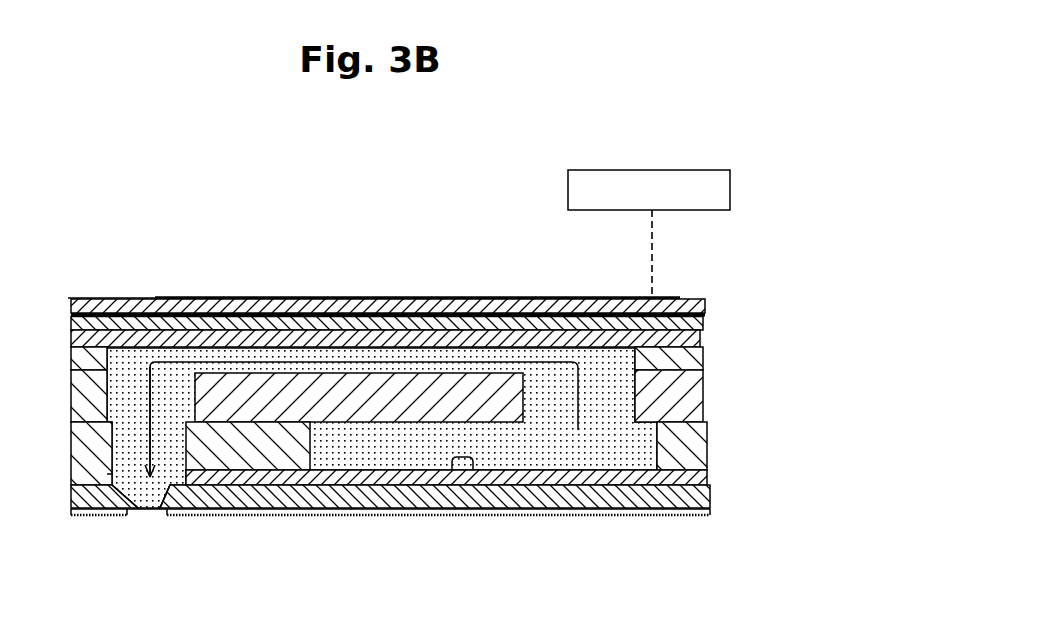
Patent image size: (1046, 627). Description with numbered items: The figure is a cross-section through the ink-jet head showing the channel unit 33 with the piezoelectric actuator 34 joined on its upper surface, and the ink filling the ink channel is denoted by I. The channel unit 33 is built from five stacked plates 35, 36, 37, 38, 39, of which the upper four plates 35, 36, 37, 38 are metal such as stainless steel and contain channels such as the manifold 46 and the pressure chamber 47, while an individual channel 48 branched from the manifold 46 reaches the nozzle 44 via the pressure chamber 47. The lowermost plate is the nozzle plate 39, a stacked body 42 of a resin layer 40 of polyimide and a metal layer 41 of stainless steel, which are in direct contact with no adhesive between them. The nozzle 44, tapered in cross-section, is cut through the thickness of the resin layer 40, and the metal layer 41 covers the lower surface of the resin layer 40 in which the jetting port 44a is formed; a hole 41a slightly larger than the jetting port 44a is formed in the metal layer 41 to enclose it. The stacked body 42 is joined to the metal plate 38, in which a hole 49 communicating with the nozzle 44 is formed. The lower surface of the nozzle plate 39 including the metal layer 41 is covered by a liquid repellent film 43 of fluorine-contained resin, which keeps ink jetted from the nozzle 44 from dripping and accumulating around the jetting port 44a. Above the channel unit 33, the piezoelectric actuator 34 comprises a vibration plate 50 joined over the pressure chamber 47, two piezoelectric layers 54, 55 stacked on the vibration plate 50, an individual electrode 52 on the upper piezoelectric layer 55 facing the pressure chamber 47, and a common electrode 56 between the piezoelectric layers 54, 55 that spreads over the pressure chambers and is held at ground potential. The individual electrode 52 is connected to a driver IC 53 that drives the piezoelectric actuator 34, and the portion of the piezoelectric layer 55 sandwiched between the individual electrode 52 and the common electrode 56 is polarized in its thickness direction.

The channel unit 33 is at (464, 458).
The piezoelectric actuator 34 is at (437, 267).
The plate 35 is at (700, 360).
The plate 36 is at (697, 400).
The plate 37 is at (697, 440).
The metal plate 38 is at (697, 475).
The nozzle plate 39 is at (490, 539).
The resin layer 40 is at (697, 497).
The metal layer 41 is at (442, 551).
The hole 41a is at (128, 517).
The stacked body 42 is at (443, 539).
The liquid repellent film 43 is at (577, 517).
The nozzle 44 is at (152, 511).
The jetting port 44a is at (160, 512).
The manifold 46 is at (456, 465).
The pressure chamber 47 is at (338, 308).
The individual channel 48 is at (353, 362).
The hole 49 is at (112, 476).
The vibration plate 50 is at (698, 332).
The individual electrode 52 is at (258, 297).
The driver IC 53 is at (687, 170).
The piezoelectric layer 54 is at (710, 320).
The piezoelectric layer 55 is at (703, 302).
The common electrode 56 is at (126, 298).
The ink I is at (392, 453).